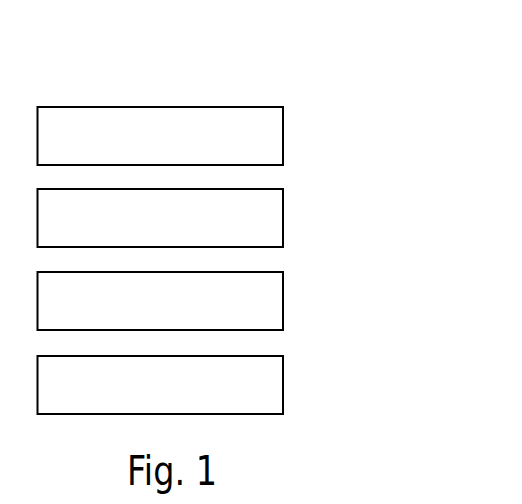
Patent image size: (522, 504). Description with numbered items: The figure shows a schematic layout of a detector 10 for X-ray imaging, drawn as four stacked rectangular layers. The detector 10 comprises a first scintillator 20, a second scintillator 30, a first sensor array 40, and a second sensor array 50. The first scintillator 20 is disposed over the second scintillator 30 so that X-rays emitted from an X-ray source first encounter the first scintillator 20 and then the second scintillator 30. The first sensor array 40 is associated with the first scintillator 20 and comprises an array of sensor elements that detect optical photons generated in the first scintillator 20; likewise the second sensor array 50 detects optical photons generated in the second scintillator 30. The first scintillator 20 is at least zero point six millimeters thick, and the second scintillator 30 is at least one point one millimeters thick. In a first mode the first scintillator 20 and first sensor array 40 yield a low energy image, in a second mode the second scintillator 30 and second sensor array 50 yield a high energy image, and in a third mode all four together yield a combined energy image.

The detector 10 is at (282, 87).
The first scintillator 20 is at (283, 133).
The second scintillator 30 is at (283, 216).
The first sensor array 40 is at (283, 300).
The second sensor array 50 is at (283, 383).